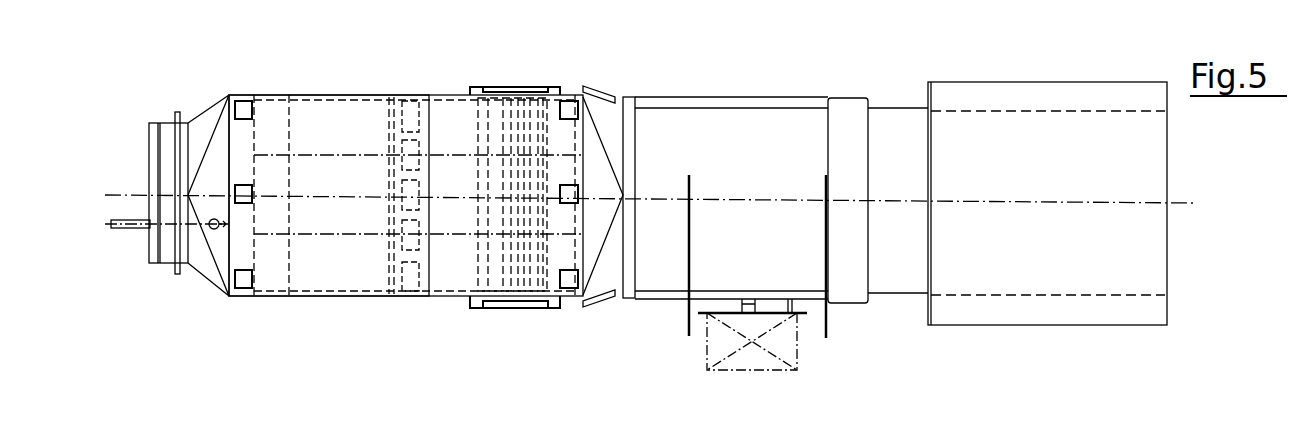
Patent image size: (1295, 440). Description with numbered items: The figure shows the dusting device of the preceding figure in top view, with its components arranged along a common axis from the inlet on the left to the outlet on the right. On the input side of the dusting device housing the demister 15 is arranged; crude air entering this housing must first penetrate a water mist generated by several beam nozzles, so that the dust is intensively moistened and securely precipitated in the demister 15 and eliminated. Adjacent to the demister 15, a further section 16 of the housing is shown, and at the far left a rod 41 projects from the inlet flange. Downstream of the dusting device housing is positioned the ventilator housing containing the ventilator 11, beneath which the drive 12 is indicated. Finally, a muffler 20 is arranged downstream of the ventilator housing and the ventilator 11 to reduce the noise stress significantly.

The ventilator 11 is at (687, 118).
The drive 12 is at (748, 358).
The demister 15 is at (344, 112).
The clamping ring section 16 is at (513, 113).
The muffler 20 is at (1007, 95).
The shaft rod 41 is at (123, 227).